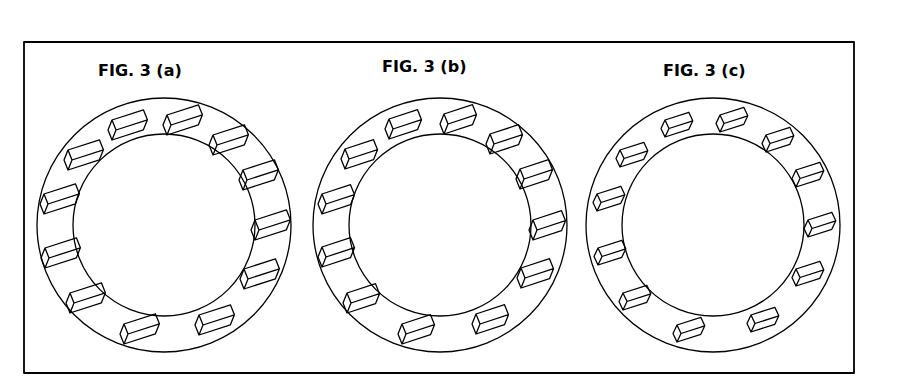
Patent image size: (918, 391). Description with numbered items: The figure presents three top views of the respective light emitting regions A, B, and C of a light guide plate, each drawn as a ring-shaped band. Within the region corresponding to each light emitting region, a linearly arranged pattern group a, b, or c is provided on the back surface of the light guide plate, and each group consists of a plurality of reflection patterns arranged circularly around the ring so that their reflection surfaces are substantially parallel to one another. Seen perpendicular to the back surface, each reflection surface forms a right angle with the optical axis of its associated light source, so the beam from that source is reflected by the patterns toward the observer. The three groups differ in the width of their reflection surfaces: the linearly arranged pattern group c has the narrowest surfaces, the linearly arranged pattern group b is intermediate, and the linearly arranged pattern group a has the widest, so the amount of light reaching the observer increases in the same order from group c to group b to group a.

The light emitting region A is at (275, 100).
The light emitting region B is at (547, 100).
The light emitting region C is at (819, 102).
The linearly arranged pattern group a is at (248, 303).
The linearly arranged pattern group b is at (522, 304).
The linearly arranged pattern group c is at (793, 305).